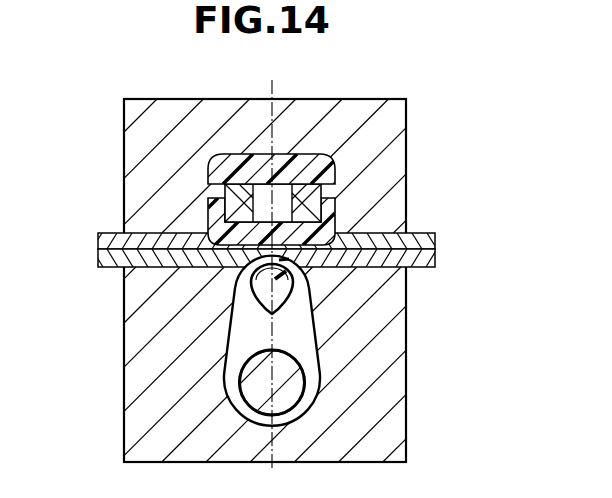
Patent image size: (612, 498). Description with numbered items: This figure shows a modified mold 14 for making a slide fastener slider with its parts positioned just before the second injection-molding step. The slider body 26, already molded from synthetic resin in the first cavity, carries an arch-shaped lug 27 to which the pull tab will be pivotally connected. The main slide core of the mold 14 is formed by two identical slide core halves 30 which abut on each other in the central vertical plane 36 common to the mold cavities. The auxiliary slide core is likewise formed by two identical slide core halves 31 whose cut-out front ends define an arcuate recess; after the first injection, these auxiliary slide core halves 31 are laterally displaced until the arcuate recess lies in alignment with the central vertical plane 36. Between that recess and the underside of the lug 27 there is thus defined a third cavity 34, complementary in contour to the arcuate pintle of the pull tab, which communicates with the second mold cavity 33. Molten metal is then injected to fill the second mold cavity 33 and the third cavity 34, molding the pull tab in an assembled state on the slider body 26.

The body member 14 is at (373, 112).
The central vertical plane 36 is at (274, 88).
The slider body 26 is at (333, 167).
The main slide core halves 30 is at (107, 240).
The auxiliary slide core halves 31 is at (107, 273).
The third cavity 34 is at (289, 262).
The arch-shaped lug 27 is at (263, 283).
The second mold cavity 33 is at (303, 343).